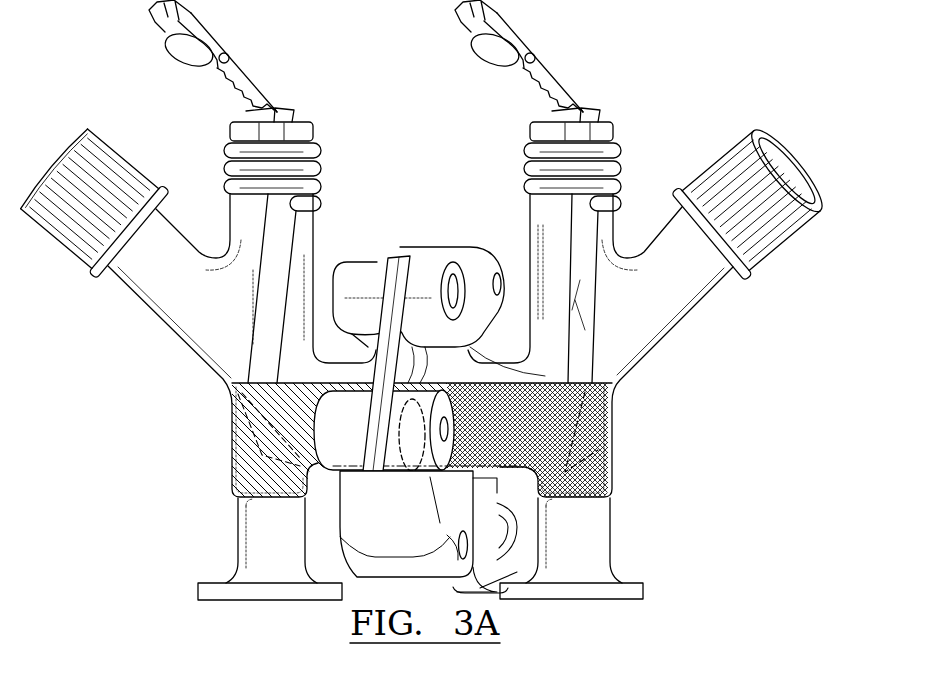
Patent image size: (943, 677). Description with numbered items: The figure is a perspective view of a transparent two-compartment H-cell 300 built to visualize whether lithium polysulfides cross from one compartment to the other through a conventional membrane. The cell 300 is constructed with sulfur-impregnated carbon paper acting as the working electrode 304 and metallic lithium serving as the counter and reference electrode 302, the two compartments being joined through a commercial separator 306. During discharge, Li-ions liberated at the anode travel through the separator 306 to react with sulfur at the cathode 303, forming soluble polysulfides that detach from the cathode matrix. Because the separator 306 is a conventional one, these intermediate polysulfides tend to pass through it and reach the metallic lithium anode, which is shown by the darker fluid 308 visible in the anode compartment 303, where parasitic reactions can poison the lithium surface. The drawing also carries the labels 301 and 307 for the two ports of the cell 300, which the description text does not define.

The H-cell 300 is at (718, 69).
The first port arm 301 is at (223, 375).
The counter and reference electrode 302 is at (236, 435).
The anode compartment 303 is at (625, 376).
The working electrode 304 is at (606, 439).
The commercial separator 306 is at (428, 492).
The first inner tube 307 is at (288, 379).
The darker fluid 308 is at (553, 380).